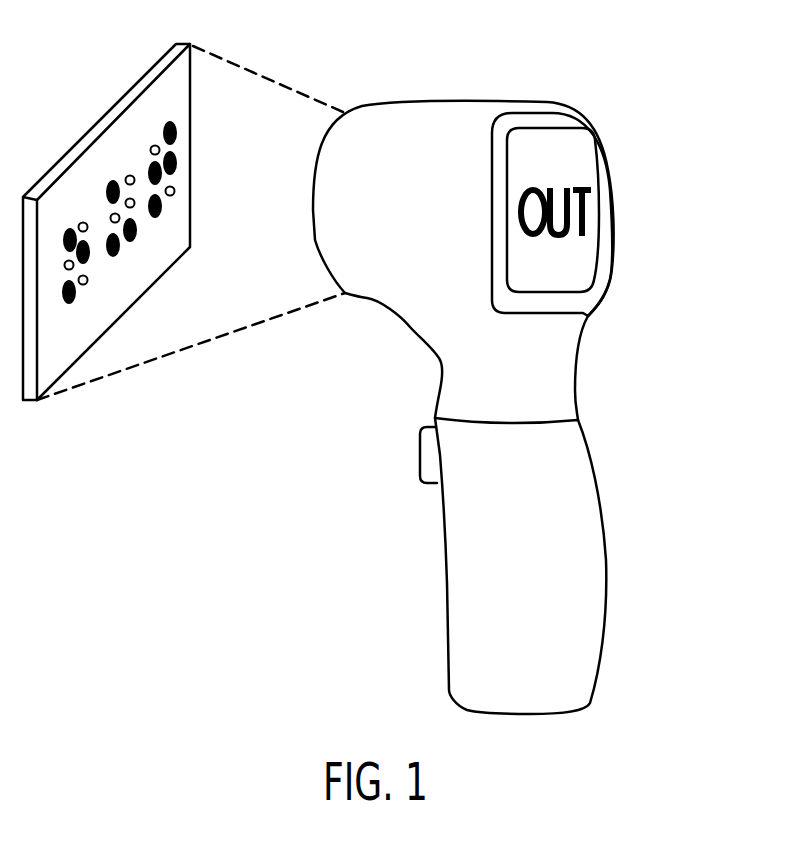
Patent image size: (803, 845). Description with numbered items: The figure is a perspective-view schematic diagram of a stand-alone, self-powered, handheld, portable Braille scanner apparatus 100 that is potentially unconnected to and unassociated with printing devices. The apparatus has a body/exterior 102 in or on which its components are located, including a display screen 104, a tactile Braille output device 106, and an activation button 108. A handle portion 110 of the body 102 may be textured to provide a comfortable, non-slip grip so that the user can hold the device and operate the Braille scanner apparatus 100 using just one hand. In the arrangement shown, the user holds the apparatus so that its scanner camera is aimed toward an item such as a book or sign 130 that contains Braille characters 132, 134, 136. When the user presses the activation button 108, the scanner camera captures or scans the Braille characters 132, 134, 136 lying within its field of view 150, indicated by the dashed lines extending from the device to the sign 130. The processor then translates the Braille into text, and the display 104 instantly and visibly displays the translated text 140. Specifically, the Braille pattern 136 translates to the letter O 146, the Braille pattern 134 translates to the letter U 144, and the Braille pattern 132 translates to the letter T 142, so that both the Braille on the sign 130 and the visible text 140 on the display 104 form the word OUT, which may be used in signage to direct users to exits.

The portable Braille scanner apparatus 100 is at (530, 378).
The body/exterior 102 is at (440, 120).
The display screen 104 is at (616, 234).
The tactile Braille output device 106 is at (438, 372).
The activation button 108 is at (432, 455).
The handle portion 110 is at (603, 512).
The book or sign 130 is at (140, 204).
The Braille pattern 132 is at (185, 211).
The Braille pattern 134 is at (160, 248).
The Braille pattern 136 is at (117, 289).
The translated text 140 is at (631, 281).
The letter T 142 is at (600, 243).
The letter U 144 is at (568, 258).
The letter O 146 is at (540, 258).
The field of view 150 is at (259, 296).